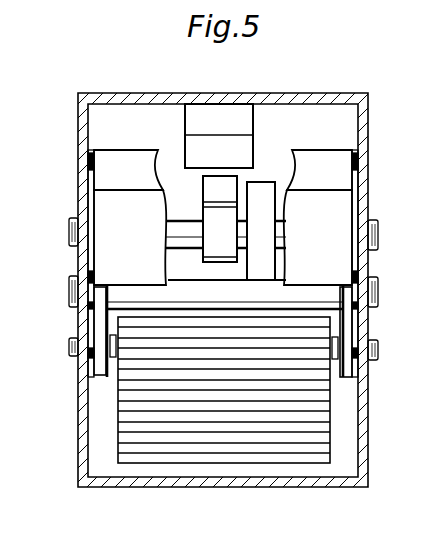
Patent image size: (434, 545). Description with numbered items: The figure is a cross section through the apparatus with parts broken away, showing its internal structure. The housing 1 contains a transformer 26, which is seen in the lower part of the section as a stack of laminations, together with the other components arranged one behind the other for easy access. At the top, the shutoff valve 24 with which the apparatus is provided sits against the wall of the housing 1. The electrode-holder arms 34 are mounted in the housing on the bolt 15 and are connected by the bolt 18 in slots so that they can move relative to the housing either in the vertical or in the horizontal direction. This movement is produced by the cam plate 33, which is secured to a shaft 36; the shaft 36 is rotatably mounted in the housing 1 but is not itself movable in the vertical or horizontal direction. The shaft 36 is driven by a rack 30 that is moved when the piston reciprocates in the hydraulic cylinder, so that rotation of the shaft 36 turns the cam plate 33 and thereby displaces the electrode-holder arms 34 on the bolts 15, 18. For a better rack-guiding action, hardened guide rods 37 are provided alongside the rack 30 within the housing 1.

The housing 1 is at (128, 488).
The bolt 15 is at (72, 352).
The bolt 18 is at (70, 292).
The shutoff valve 24 is at (223, 125).
The transformer 26 is at (214, 458).
The rack 30 is at (203, 190).
The cam plate 33 is at (265, 195).
The electrode-holder arms 34 is at (105, 322).
The shaft 36 is at (69, 235).
The guide rods 37 is at (87, 158).